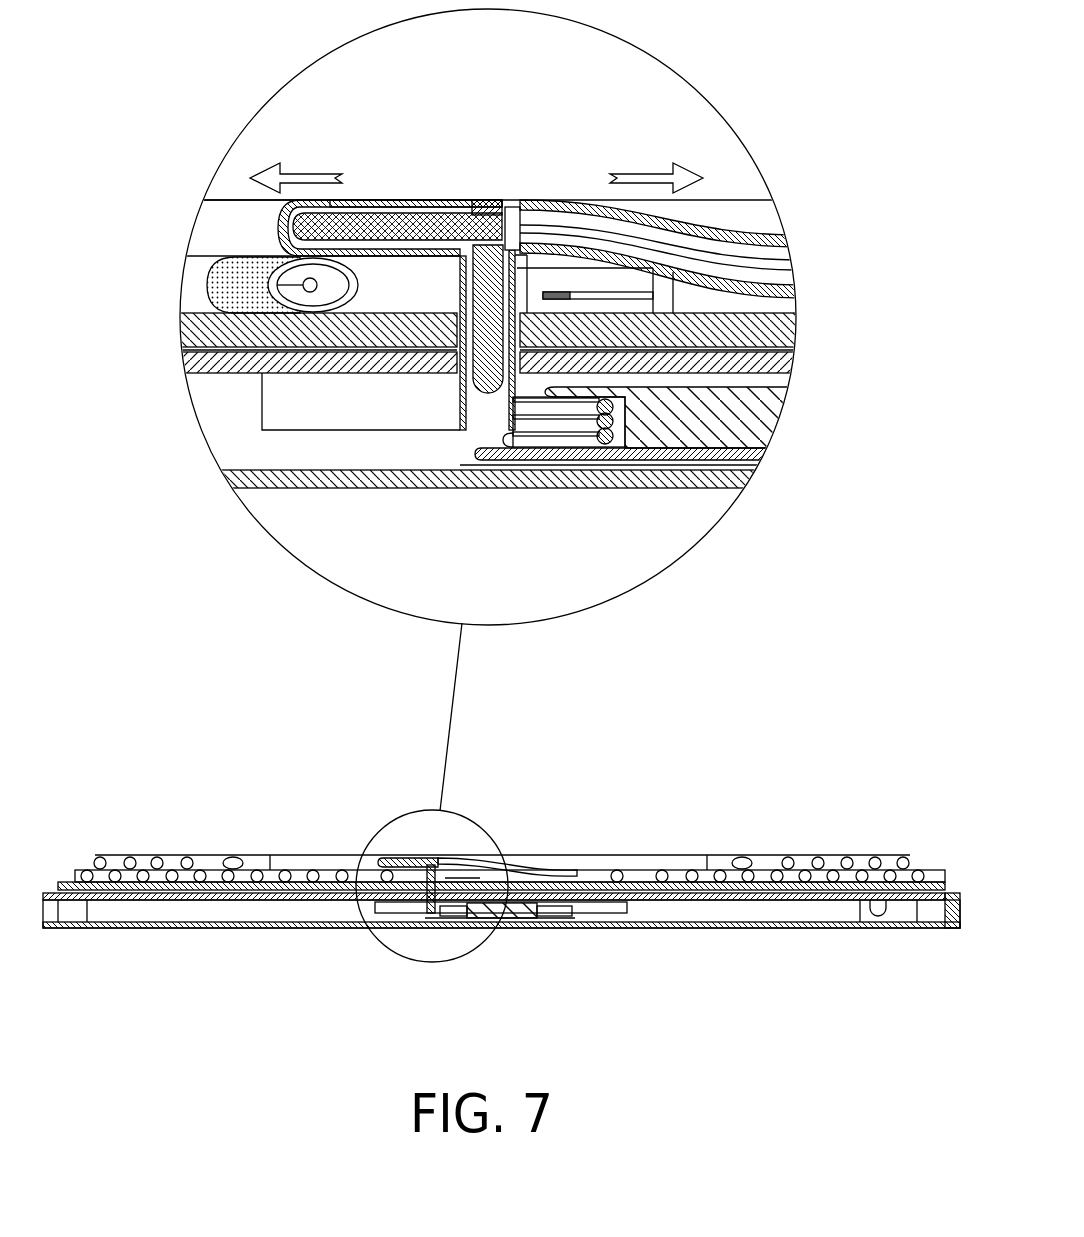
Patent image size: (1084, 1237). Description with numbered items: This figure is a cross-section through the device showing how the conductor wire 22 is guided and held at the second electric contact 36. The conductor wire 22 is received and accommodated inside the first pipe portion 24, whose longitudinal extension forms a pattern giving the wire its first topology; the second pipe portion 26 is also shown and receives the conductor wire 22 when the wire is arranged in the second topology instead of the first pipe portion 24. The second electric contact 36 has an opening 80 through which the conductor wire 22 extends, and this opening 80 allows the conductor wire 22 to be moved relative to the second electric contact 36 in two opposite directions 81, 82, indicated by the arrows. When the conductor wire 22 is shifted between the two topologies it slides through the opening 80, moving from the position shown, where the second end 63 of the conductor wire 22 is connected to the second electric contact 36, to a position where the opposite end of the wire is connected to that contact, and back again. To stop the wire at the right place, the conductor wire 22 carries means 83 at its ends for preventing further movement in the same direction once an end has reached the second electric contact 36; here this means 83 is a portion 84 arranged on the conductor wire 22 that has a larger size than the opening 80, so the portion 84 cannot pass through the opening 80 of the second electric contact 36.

The conductor wire 22 is at (377, 215).
The first pipe portion 24 is at (227, 230).
The second pipe portion 26 is at (226, 283).
The second electric contact 36 is at (481, 380).
The second end 63 is at (423, 186).
The opening 80 is at (485, 200).
The first direction 81 is at (645, 170).
The second direction 82 is at (312, 172).
The means for preventing further movement 83 is at (547, 194).
The portion 84 is at (510, 215).